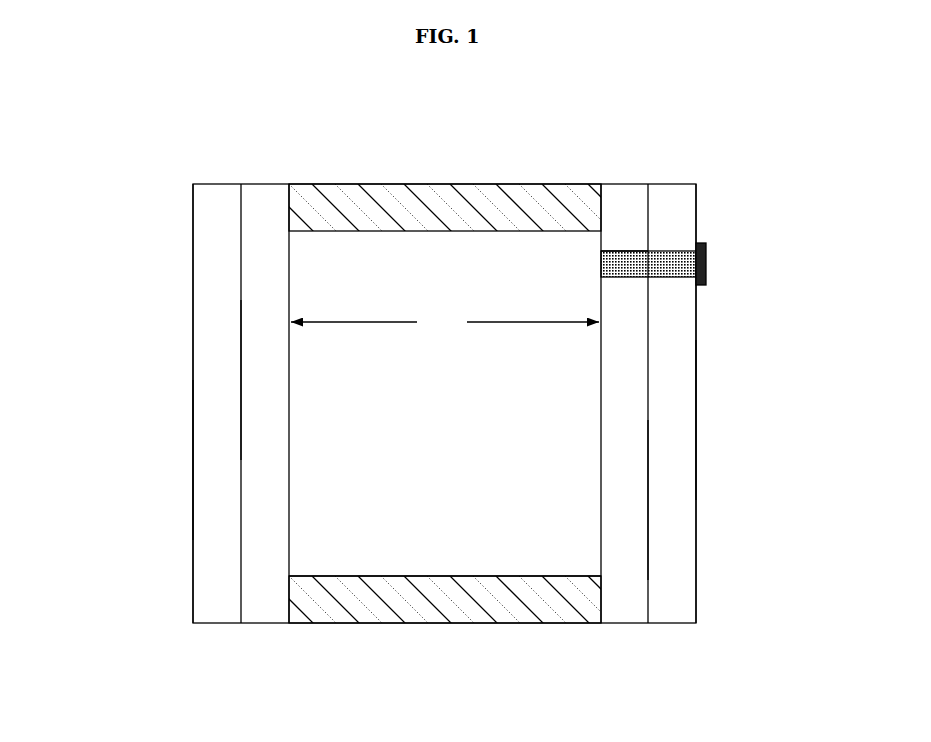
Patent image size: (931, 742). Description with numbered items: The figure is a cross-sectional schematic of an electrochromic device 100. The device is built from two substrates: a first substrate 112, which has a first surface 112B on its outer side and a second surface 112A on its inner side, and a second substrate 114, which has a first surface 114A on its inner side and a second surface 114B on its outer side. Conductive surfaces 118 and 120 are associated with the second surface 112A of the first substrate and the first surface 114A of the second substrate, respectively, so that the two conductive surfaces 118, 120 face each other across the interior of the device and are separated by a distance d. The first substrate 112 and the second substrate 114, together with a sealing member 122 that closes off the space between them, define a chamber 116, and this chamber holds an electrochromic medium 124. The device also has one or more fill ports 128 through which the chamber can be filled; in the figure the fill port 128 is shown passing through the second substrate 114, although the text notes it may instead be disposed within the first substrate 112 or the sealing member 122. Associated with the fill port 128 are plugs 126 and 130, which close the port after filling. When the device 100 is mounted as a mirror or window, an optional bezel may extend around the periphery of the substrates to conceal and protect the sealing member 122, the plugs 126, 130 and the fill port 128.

The electrochromic device 100 is at (404, 360).
The first substrate 112 is at (217, 625).
The second surface of first substrate 112A is at (239, 380).
The first surface of first substrate 112B is at (191, 457).
The second substrate 114 is at (680, 625).
The first surface of second substrate 114A is at (650, 497).
The second surface of second substrate 114B is at (698, 420).
The chamber 116 is at (445, 363).
The conductive surface 118 is at (267, 578).
The conductive surface 120 is at (633, 578).
The sealing member 122 is at (382, 196).
The electrochromic medium 124 is at (476, 509).
The plug 126 is at (667, 259).
The fill port 128 is at (628, 249).
The plug 130 is at (709, 287).